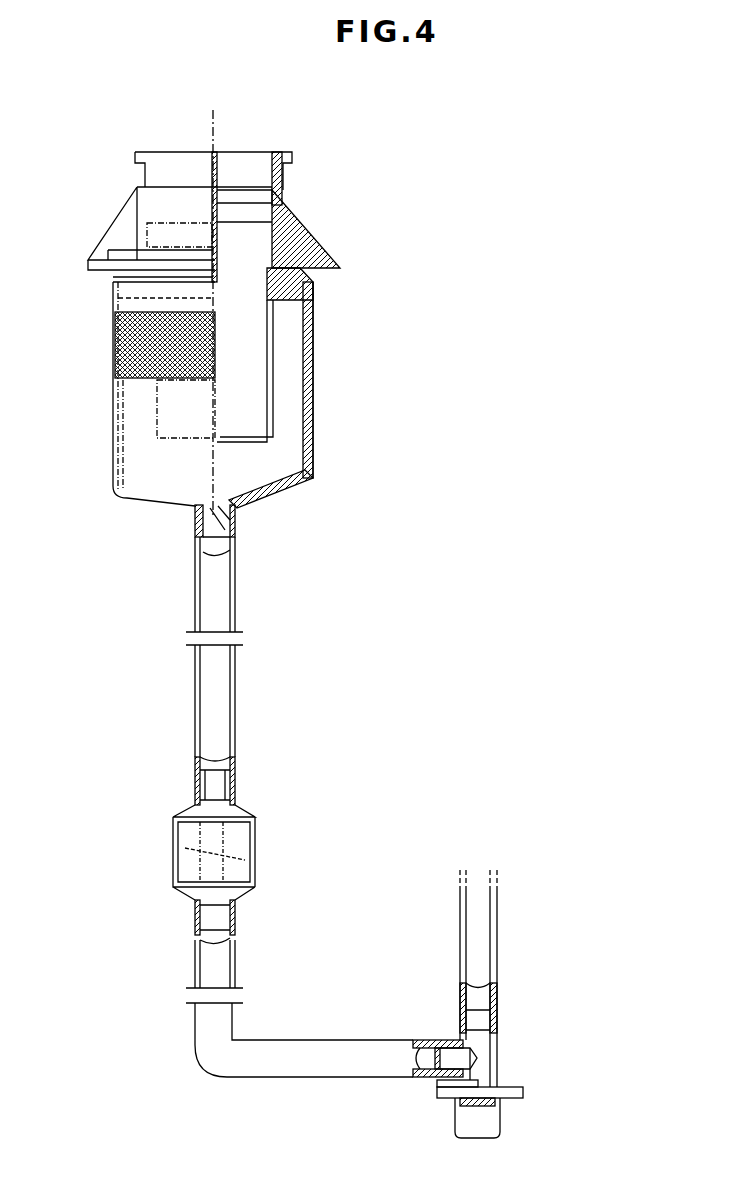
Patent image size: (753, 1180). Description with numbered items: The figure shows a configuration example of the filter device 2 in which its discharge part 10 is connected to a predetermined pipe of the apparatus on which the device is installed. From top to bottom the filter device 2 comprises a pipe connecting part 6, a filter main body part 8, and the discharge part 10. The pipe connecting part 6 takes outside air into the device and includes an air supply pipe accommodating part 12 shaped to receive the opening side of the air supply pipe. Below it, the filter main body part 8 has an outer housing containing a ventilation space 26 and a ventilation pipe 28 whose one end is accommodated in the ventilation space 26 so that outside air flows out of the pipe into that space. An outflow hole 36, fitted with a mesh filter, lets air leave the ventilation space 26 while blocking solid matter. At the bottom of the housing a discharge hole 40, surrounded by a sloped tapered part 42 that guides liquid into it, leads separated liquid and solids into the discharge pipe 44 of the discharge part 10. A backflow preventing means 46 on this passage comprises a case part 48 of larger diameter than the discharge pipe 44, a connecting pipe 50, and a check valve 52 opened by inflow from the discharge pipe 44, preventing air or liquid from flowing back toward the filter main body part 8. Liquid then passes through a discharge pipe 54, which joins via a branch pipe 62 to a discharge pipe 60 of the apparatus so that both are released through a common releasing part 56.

The filter device 2 is at (651, 147).
The pipe connecting part 6 is at (428, 147).
The filter main body part 8 is at (430, 280).
The discharge part 10 is at (599, 507).
The air supply pipe accommodating part 12 is at (265, 157).
The ventilation space 26 is at (290, 458).
The ventilation pipe 28 is at (275, 345).
The outflow hole 36 is at (148, 378).
The discharge hole 40 is at (226, 537).
The tapered part 42 is at (255, 512).
The discharge pipe 44 is at (236, 600).
The backflow preventing means 46 is at (341, 772).
The case part 48 is at (250, 840).
The connecting pipe 50 is at (217, 793).
The check valve 52 is at (243, 866).
The discharge pipe 54 is at (262, 1077).
The releasing part 56 is at (490, 1122).
The discharge pipe 60 is at (497, 932).
The branch pipe 62 is at (490, 1055).